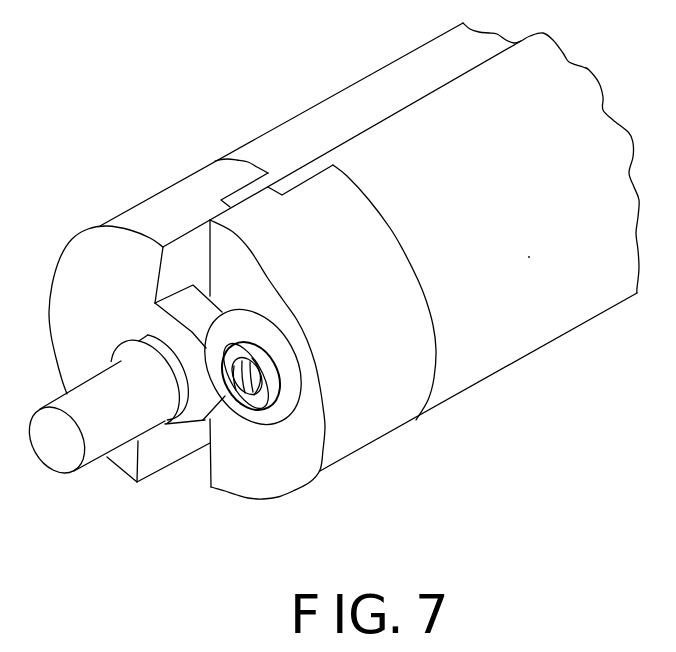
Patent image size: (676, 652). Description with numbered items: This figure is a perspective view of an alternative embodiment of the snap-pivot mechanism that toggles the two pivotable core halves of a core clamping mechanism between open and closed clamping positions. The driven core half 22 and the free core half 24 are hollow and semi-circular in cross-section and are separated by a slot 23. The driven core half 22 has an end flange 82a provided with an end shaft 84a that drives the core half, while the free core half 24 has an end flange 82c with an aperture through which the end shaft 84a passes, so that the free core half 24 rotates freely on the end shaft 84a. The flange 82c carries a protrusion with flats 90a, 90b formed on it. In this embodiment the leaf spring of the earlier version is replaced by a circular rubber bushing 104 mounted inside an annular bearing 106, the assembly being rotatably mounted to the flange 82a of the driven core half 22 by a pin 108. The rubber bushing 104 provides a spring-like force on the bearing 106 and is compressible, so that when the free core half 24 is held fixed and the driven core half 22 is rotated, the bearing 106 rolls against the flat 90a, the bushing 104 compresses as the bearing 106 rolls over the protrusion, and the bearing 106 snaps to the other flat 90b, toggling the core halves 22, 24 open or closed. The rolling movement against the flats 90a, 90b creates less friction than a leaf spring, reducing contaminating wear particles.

The pivotable core half 22 is at (571, 330).
The slot 23 is at (193, 456).
The pivotable core half 24 is at (340, 92).
The end flange 82a is at (300, 458).
The end flange 82c is at (75, 258).
The end shaft 84a is at (97, 456).
The flat 90a is at (222, 313).
The flat 90b is at (218, 406).
The circular rubber bushing 104 is at (266, 373).
The annular bearing 106 is at (283, 403).
The pin 108 is at (252, 364).